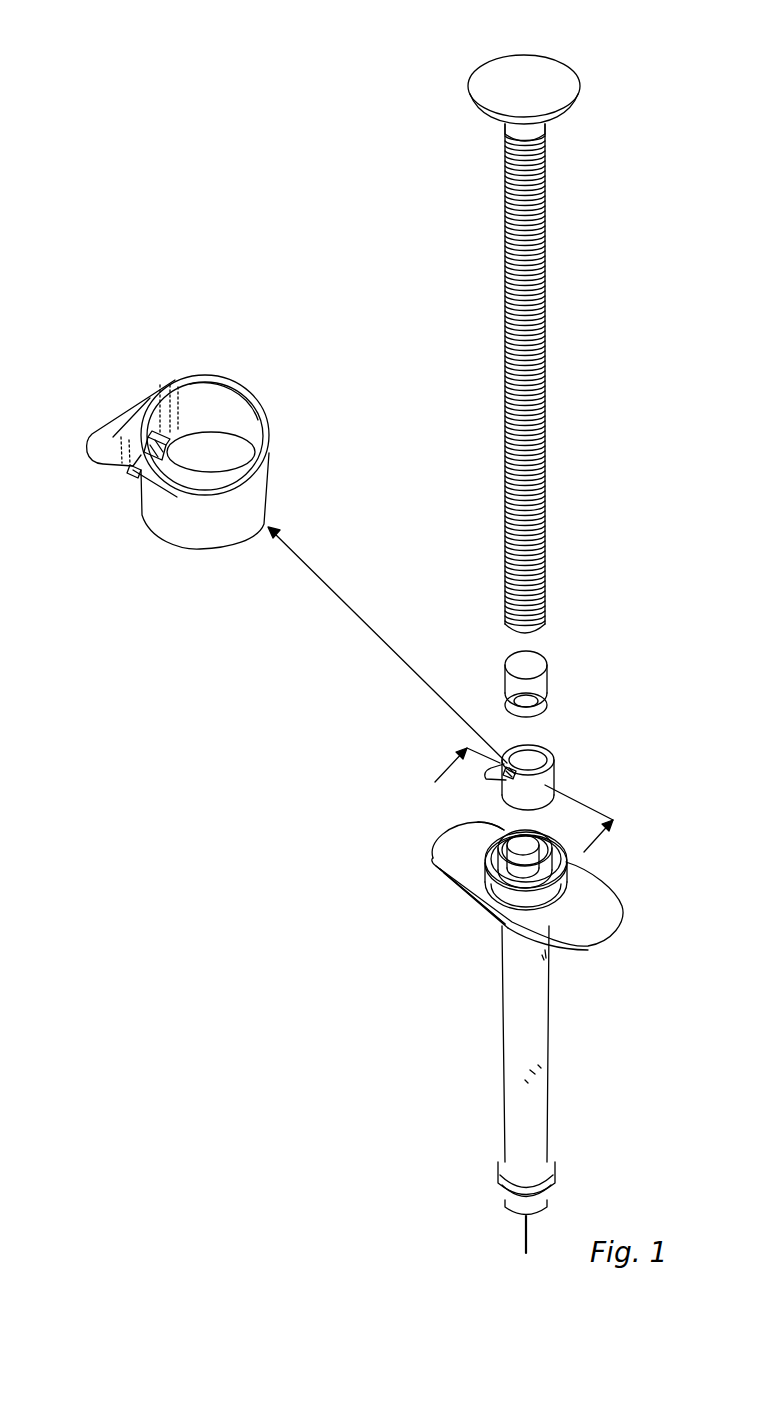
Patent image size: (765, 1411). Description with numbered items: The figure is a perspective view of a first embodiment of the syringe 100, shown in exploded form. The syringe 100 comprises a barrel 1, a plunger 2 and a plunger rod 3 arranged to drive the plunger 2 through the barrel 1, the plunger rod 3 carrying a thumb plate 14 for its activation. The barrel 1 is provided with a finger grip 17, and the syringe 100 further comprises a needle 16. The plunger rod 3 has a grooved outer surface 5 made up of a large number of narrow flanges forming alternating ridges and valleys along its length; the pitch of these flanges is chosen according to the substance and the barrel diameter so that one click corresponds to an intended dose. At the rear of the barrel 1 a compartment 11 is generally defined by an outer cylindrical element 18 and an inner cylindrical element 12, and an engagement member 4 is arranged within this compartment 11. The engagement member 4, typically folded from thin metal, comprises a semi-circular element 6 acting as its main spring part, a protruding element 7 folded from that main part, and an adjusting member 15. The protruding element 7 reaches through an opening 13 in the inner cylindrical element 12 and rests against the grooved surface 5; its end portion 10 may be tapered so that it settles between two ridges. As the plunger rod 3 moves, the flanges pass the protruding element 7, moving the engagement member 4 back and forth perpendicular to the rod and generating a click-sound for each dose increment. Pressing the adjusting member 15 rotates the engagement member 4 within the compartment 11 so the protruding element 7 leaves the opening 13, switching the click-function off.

The syringe 100 is at (208, 129).
The barrel 1 is at (549, 1003).
The plunger 2 is at (538, 684).
The plunger rod 3 is at (576, 378).
The engagement member 4 is at (558, 782).
The grooved outer surface 5 is at (548, 320).
The semi-circular element 6 is at (252, 435).
The protruding element 7 is at (140, 470).
The end portion 10 is at (152, 447).
The compartment 11 is at (566, 864).
The inner cylindrical element 12 is at (547, 840).
The opening 13 is at (508, 832).
The thumb plate 14 is at (541, 80).
The adjusting member 15 is at (105, 428).
The needle 16 is at (522, 1227).
The finger grip 17 is at (600, 920).
The outer cylindrical element 18 is at (500, 905).